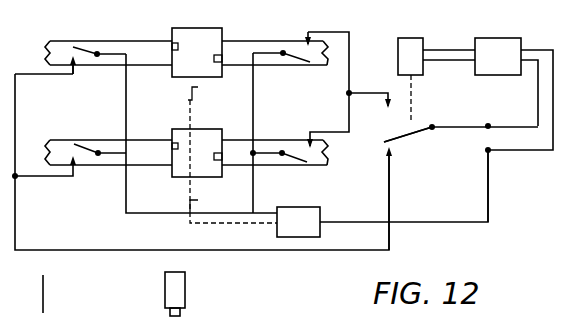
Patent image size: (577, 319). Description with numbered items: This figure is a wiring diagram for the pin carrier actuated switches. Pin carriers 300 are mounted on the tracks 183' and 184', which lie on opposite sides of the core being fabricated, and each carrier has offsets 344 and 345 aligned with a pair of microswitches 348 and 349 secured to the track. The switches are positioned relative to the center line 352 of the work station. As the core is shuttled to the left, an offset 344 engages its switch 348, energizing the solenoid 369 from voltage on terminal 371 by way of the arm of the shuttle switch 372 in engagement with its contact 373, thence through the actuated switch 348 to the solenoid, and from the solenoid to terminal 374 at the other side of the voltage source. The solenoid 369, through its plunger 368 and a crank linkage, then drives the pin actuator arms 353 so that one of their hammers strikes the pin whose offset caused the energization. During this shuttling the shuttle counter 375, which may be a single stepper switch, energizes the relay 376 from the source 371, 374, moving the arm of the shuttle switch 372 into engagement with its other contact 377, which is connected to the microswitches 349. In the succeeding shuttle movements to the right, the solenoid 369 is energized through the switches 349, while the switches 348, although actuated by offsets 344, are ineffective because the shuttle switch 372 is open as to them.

The track 183' is at (102, 39).
The track 184' is at (108, 176).
The pin carrier 300 is at (224, 24).
The offset 344 is at (172, 46).
The offset 345 is at (222, 60).
The microswitch 348 is at (76, 68).
The microswitch 349 is at (323, 88).
The center line 352 is at (45, 305).
The pin actuator arm 353 is at (188, 101).
The plunger 368 is at (180, 313).
The solenoid 369 is at (320, 232).
The terminal 371 is at (488, 104).
The shuttle switch 372 is at (420, 148).
The contact 373 is at (388, 152).
The terminal 374 is at (490, 153).
The shuttle counter 375 is at (503, 38).
The relay 376 is at (412, 38).
The contact 377 is at (387, 110).